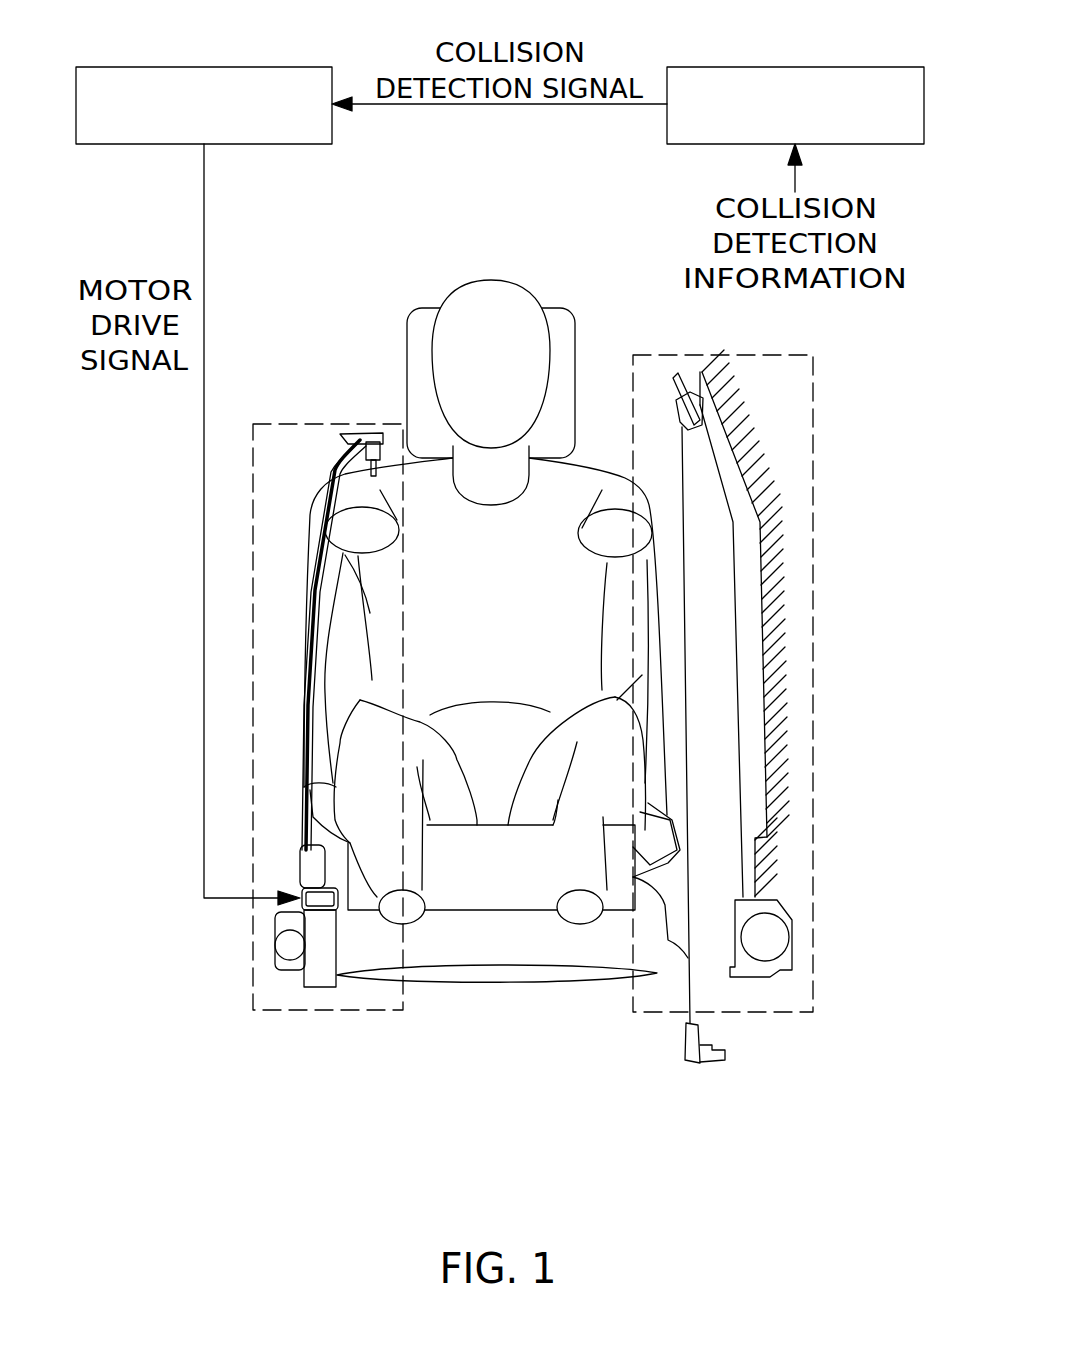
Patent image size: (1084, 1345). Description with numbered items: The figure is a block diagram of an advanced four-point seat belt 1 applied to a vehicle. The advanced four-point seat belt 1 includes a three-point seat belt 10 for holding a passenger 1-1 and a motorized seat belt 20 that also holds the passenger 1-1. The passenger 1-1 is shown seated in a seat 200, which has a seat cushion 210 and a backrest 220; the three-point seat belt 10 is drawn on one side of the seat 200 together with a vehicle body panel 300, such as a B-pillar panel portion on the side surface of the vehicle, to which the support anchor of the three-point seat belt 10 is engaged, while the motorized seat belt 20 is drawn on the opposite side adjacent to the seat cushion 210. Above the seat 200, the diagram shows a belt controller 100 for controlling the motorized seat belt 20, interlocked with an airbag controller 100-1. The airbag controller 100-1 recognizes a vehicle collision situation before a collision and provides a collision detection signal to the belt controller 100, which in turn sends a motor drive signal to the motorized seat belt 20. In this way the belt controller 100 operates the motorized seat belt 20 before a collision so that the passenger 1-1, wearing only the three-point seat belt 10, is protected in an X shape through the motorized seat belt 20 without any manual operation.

The advanced four-point seat belt 1 is at (168, 634).
The passenger 1-1 is at (502, 293).
The three-point seat belt 10 is at (813, 800).
The motorized seat belt 20 is at (253, 970).
The belt controller 100 is at (205, 67).
The airbag controller 100-1 is at (793, 67).
The seat 200 is at (512, 760).
The seat cushion 210 is at (447, 950).
The backrest 220 is at (580, 927).
The vehicle body panel 300 is at (763, 580).